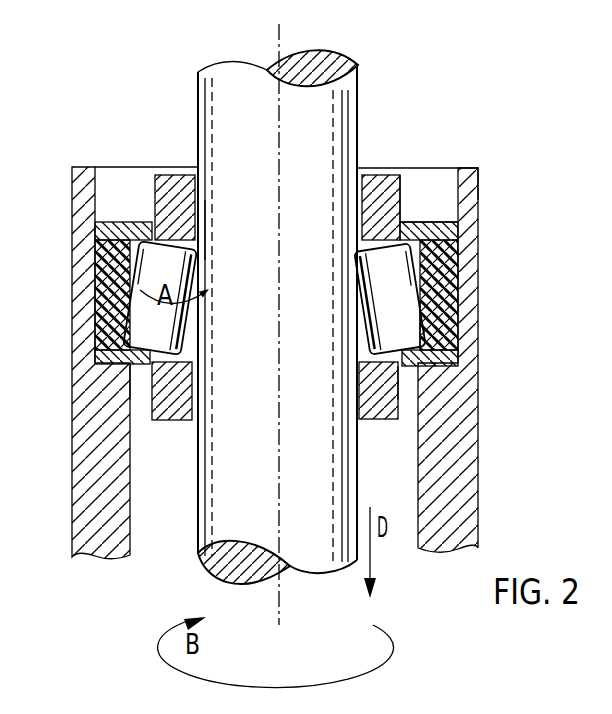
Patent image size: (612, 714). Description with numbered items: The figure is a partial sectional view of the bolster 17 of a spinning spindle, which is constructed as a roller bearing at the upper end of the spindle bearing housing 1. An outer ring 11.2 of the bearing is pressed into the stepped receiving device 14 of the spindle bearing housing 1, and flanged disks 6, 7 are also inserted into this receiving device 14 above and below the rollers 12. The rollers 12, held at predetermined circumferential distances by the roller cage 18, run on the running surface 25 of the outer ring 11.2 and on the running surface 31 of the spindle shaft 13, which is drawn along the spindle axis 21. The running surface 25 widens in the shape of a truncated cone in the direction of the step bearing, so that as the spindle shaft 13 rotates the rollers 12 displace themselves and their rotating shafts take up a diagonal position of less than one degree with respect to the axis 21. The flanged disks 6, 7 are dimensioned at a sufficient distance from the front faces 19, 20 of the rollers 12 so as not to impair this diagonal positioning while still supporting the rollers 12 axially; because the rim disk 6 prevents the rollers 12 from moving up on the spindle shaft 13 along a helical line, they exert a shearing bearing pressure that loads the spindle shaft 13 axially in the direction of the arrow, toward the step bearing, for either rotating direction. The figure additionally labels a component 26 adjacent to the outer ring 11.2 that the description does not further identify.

The spindle bearing housing 1 is at (466, 483).
The flanged disk 6 is at (450, 232).
The flanged disk 7 is at (456, 356).
The outer ring of the bearing 11.2 is at (455, 281).
The rollers 12 is at (148, 272).
The spindle shaft 13 is at (358, 92).
The receiving device 14 is at (467, 197).
The bolster 17 is at (421, 186).
The roller cage 18 is at (381, 183).
The front face 19 is at (200, 230).
The front face 20 is at (132, 378).
The spindle axis 21 is at (280, 32).
The running surface 25 is at (405, 352).
The inner ring 26 is at (457, 312).
The running surface 31 is at (360, 350).